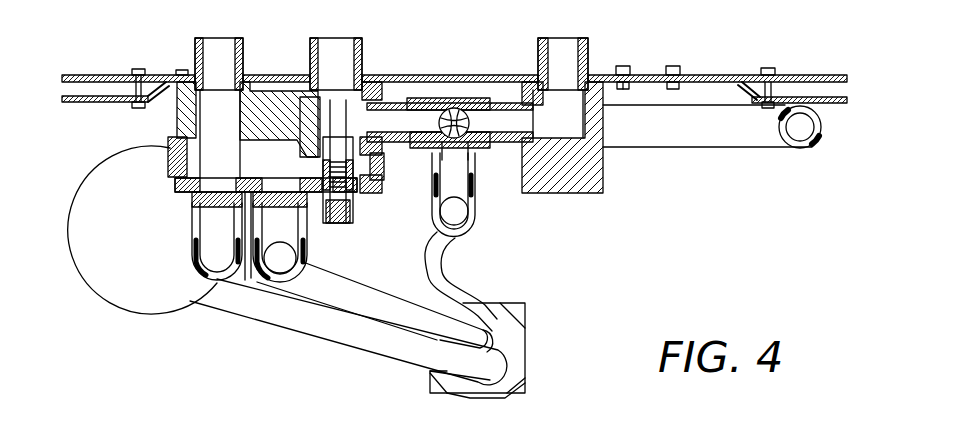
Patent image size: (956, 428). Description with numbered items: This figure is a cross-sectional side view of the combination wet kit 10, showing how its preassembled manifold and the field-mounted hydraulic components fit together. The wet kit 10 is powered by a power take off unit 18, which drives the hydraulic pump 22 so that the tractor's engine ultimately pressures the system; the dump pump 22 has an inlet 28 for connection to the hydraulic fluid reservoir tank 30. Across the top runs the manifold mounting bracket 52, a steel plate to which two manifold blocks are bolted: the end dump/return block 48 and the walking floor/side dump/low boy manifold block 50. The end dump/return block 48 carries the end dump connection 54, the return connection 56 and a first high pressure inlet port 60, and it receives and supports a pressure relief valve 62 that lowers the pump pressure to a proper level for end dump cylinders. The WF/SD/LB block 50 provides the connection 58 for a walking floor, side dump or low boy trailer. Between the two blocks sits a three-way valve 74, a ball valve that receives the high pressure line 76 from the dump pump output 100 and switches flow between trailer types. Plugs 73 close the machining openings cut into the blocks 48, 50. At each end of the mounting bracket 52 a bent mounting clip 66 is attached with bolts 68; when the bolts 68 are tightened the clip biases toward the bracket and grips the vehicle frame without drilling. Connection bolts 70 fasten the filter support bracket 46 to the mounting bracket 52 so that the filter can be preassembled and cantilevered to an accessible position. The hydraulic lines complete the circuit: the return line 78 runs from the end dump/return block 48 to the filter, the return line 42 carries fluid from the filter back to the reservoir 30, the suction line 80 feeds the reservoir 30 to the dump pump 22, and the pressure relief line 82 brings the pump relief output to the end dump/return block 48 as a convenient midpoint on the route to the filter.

The wet kit 10 is at (716, 238).
The power take off unit 18 is at (519, 306).
The hydraulic pump 22 is at (519, 344).
The inlet 28 is at (527, 367).
The hydraulic fluid reservoir tank 30 is at (107, 296).
The return line 42 is at (685, 150).
The filter support bracket 46 is at (648, 72).
The end dump/return block 48 is at (266, 90).
The walking floor/side dump/low boy manifold block 50 is at (572, 196).
The mounting bracket 52 is at (488, 73).
The end dump connection 54 is at (340, 38).
The return connection 56 is at (216, 38).
The walking floor/side dump/low boy connection 58 is at (567, 38).
The first high pressure inlet port 60 is at (384, 100).
The pressure relief valve 62 is at (351, 228).
The mounting clip 66 is at (108, 101).
The bolt 68 is at (135, 63).
The connection bolt 70 is at (678, 64).
The plug 73 is at (176, 120).
The three-way valve 74 is at (455, 108).
The high pressure line 76 is at (432, 247).
The return line 78 is at (214, 290).
The suction line 80 is at (367, 348).
The pressure relief line 82 is at (307, 233).
The dump pump output 100 is at (489, 322).